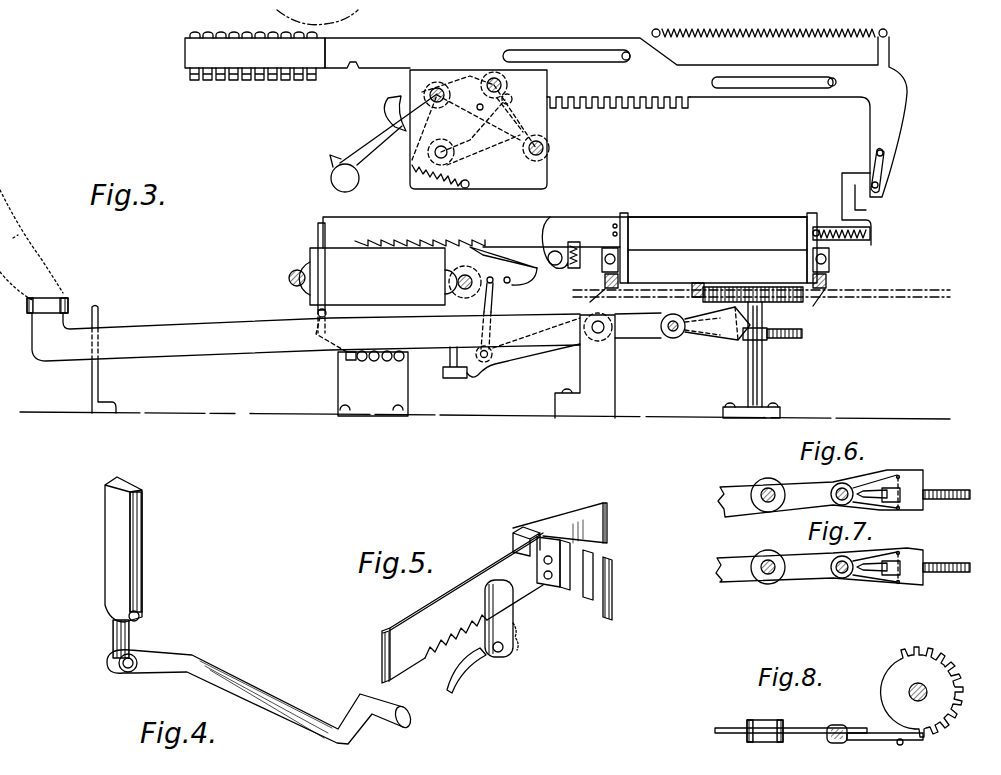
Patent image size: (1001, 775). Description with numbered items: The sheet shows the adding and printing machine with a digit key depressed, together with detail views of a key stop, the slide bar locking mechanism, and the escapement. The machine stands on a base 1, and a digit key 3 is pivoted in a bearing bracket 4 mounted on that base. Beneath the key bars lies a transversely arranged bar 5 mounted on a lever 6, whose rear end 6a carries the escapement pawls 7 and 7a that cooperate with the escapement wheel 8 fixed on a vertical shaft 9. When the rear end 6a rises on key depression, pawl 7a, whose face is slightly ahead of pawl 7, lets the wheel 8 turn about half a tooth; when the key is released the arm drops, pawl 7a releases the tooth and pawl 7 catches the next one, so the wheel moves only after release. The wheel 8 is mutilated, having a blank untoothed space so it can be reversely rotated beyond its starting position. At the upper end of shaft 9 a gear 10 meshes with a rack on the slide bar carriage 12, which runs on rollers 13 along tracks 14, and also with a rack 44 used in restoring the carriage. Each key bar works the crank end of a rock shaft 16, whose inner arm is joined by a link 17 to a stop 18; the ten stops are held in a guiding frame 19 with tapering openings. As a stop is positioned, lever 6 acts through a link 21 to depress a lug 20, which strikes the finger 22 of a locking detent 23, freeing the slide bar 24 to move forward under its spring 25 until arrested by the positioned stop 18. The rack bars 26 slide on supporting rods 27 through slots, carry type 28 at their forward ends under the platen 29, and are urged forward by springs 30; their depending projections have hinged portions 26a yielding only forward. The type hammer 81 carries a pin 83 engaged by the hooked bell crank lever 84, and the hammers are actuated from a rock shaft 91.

In FIG. 3, the base 1 is at (665, 385).
In FIG. 3, the digit keys 3 is at (290, 301).
In FIG. 3, the bearing bracket 4 is at (585, 365).
In FIG. 3, the transversely arranged bar 5 is at (474, 379).
In FIG. 3, the lever 6 is at (529, 350).
In FIG. 6, the lever 6 is at (820, 493).
In FIG. 7, the lever 6 is at (819, 566).
In FIG. 8, the lever 6 is at (735, 730).
In FIG. 3, the rear end of lever 6a is at (650, 325).
In FIG. 6, the rear end of lever 6a is at (821, 493).
In FIG. 7, the rear end of lever 6a is at (821, 568).
In FIG. 8, the rear end of lever 6a is at (815, 723).
In FIG. 3, the escapement pawl 7 is at (700, 320).
In FIG. 6, the escapement pawl 7 is at (909, 476).
In FIG. 7, the escapement pawl 7 is at (917, 555).
In FIG. 8, the escapement pawl 7 is at (876, 742).
In FIG. 3, the escapement pawl 7a is at (715, 340).
In FIG. 6, the escapement pawl 7a is at (905, 512).
In FIG. 7, the escapement pawl 7a is at (873, 580).
In FIG. 3, the escapement wheel 8 is at (796, 339).
In FIG. 6, the escapement wheel 8 is at (948, 497).
In FIG. 7, the escapement wheel 8 is at (940, 572).
In FIG. 8, the escapement wheel 8 is at (922, 692).
In FIG. 3, the vertical shaft 9 is at (764, 360).
In FIG. 8, the vertical shaft 9 is at (910, 695).
In FIG. 3, the gear 10 is at (783, 302).
In FIG. 3, the slide bar carriage 12 is at (743, 283).
In FIG. 5, the slide bar carriage 12 is at (600, 600).
In FIG. 3, the rollers 13 is at (603, 277).
In FIG. 3, the tracks 14 is at (697, 307).
In FIG. 3, the rock shaft 16 is at (357, 363).
In FIG. 4, the rock shaft 16 is at (260, 688).
In FIG. 3, the link 17 is at (317, 314).
In FIG. 4, the link 17 is at (130, 646).
In FIG. 3, the stop 18 is at (317, 236).
In FIG. 4, the stop 18 is at (137, 573).
In FIG. 3, the guiding frame 19 is at (385, 276).
In FIG. 3, the lug 20 is at (501, 298).
In FIG. 3, the link 21 is at (483, 306).
In FIG. 3, the finger 22 is at (512, 284).
In FIG. 5, the finger 22 is at (463, 680).
In FIG. 3, the locking detent 23 is at (498, 253).
In FIG. 5, the locking detent 23 is at (447, 656).
In FIG. 3, the slide bar 24 is at (565, 232).
In FIG. 5, the slide bar 24 is at (462, 608).
In FIG. 3, the spring 25 is at (845, 241).
In FIG. 3, the rack bar 26 is at (616, 141).
In FIG. 3, the hinged portion 26a is at (901, 171).
In FIG. 3, the supporting rods 27 is at (627, 52).
In FIG. 3, the type 28 is at (275, 74).
In FIG. 3, the platen 29 is at (358, 12).
In FIG. 3, the spring 30 is at (791, 35).
In FIG. 3, the rack 44 is at (895, 298).
In FIG. 3, the type hammer 81 is at (344, 173).
In FIG. 3, the pin 83 is at (396, 135).
In FIG. 3, the bell crank lever 84 is at (388, 105).
In FIG. 3, the rock shaft 91 is at (543, 148).